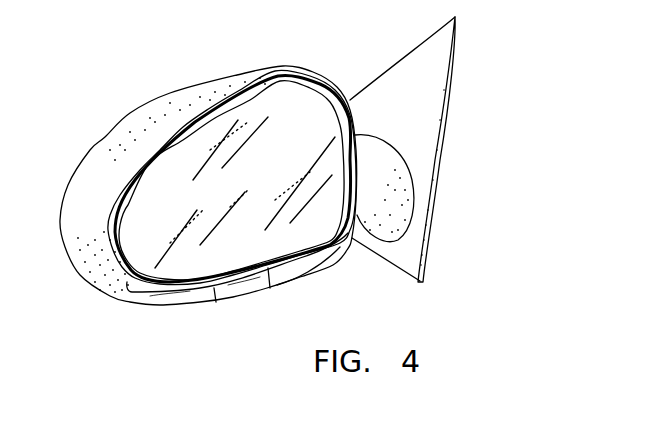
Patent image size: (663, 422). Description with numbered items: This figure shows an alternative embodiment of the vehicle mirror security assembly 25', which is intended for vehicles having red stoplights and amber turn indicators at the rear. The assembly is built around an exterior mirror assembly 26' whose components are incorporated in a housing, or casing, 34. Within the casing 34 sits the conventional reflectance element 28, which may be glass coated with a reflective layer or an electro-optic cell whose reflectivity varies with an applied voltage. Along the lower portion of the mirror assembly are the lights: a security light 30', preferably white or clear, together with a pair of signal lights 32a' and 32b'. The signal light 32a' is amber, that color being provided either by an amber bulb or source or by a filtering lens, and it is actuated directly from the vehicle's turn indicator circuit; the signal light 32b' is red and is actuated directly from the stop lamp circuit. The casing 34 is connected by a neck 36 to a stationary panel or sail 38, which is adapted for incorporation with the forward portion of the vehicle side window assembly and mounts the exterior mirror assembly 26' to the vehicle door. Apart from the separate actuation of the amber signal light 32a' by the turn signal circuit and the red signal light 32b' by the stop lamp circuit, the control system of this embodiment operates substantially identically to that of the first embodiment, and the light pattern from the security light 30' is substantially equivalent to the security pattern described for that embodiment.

The vehicle mirror security assembly 25' is at (212, 13).
The exterior mirror assembly 26' is at (232, 143).
The reflectance element 28 is at (192, 125).
The security light 30' is at (244, 275).
The signal light 32a' is at (167, 317).
The signal light 32b' is at (257, 307).
The housing 34 is at (104, 138).
The neck 36 is at (352, 238).
The sail 38 is at (447, 73).